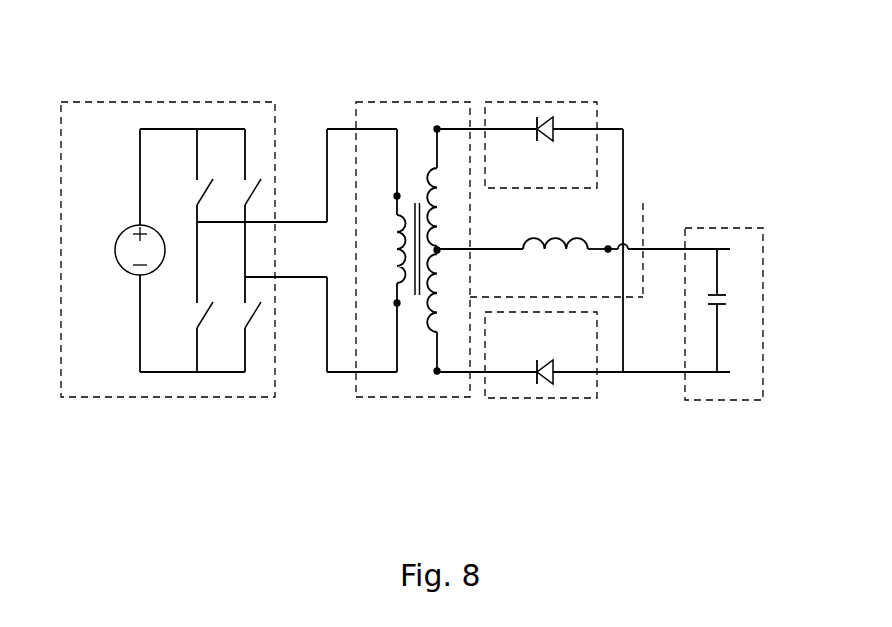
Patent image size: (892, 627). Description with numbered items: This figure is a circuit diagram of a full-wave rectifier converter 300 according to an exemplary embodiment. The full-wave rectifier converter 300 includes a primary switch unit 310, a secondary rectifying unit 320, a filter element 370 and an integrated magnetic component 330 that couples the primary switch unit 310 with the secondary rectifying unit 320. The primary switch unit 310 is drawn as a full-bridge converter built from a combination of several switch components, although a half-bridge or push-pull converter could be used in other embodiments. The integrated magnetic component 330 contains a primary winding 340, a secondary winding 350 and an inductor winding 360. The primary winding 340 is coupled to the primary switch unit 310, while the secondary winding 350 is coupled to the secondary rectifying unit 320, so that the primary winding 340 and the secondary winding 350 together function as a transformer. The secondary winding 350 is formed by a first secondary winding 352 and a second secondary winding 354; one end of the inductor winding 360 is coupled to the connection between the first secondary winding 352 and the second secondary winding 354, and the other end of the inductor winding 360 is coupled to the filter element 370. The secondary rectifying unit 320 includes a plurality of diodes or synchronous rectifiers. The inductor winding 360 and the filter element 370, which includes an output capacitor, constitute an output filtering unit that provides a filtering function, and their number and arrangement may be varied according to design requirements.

The full-wave rectifier converter 300 is at (53, 49).
The primary switch unit 310 is at (167, 397).
The secondary rectifying unit 320 is at (567, 102).
The integrated magnetic component 330 is at (415, 102).
The primary winding 340 is at (397, 238).
The secondary winding 350 is at (492, 483).
The first secondary winding 352 is at (440, 202).
The second secondary winding 354 is at (438, 300).
The inductor winding 360 is at (578, 247).
The filter element 370 is at (712, 400).